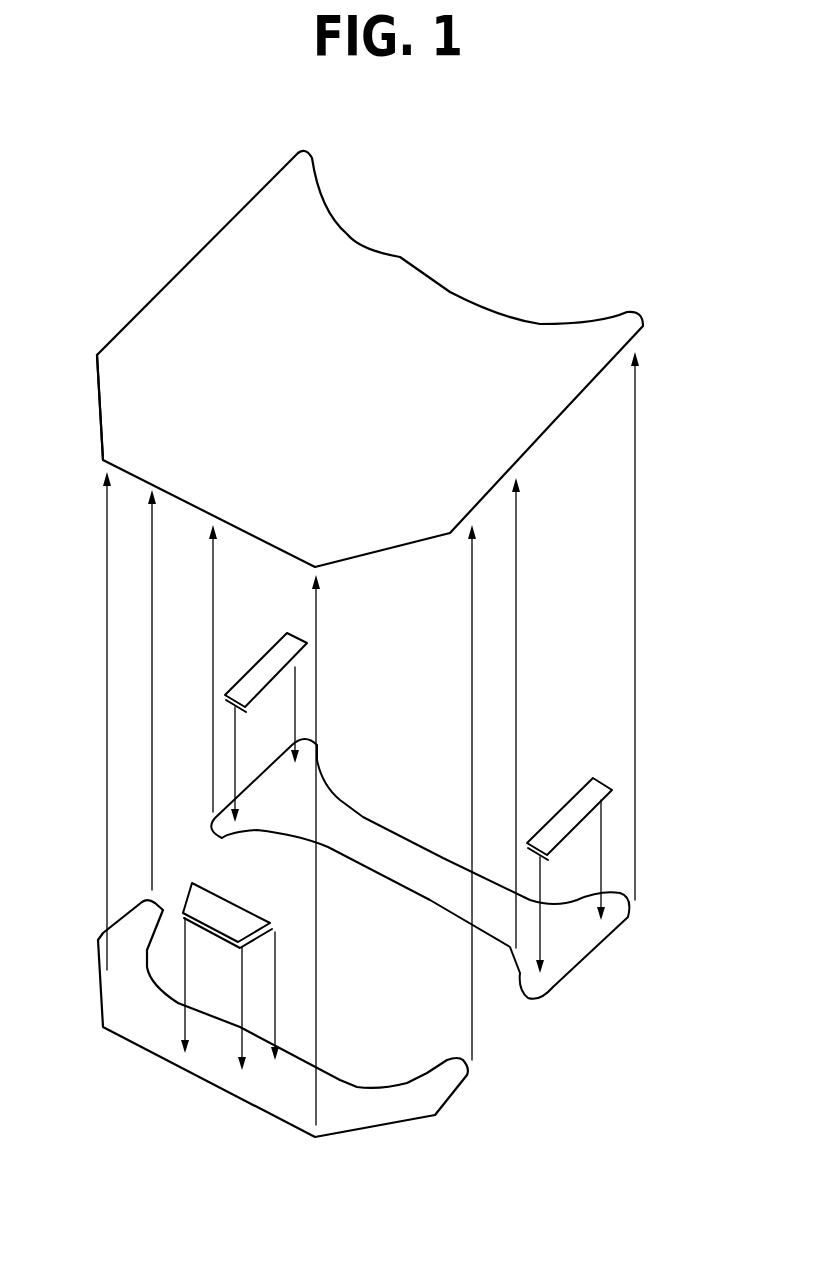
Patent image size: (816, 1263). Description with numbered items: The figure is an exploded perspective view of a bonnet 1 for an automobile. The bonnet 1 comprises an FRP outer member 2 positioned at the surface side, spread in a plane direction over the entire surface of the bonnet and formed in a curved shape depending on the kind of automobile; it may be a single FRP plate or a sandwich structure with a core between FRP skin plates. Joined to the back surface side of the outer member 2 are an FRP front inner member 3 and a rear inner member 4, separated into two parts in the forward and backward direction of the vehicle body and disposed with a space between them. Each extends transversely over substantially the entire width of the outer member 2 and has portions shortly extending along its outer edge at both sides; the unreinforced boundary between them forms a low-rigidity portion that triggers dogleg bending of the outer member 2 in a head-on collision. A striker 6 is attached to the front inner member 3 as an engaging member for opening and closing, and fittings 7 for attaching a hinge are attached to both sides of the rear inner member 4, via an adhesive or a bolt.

The bonnet for an automobile 1 is at (442, 262).
The outer member 2 is at (368, 267).
The front inner member 3 is at (138, 1030).
The rear inner member 4 is at (573, 948).
The striker 6 is at (253, 912).
The fittings 7 is at (266, 666).